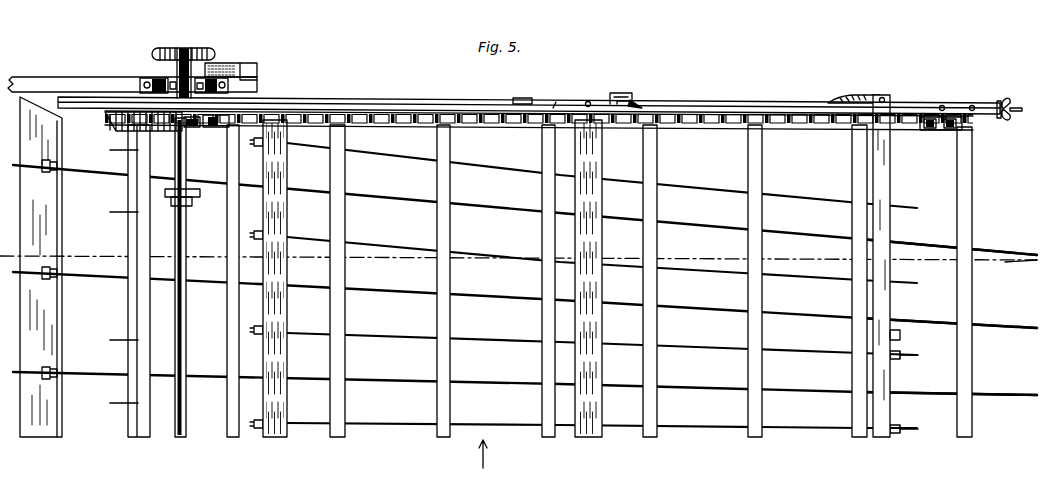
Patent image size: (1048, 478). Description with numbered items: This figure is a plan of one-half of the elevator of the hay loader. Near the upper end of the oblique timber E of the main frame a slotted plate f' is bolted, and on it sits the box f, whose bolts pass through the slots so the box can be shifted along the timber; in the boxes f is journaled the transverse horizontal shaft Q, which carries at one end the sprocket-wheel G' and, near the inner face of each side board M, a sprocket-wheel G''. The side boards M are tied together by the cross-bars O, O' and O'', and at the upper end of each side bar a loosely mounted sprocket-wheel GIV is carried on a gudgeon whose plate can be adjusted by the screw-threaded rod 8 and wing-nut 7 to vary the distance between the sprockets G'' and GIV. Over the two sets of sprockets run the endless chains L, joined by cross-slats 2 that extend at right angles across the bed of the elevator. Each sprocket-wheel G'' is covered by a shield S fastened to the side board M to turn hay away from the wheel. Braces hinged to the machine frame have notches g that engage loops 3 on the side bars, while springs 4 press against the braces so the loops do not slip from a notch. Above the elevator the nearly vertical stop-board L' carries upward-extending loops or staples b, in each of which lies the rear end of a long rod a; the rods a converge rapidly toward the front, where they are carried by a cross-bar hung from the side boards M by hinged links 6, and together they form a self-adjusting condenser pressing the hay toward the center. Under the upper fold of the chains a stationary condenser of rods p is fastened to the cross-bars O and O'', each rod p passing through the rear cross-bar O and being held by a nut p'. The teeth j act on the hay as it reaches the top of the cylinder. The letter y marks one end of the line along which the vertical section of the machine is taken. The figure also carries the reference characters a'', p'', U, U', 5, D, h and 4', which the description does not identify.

The rod a is at (520, 280).
The wire end a'' is at (950, 336).
The rod p is at (602, 301).
The nut p' is at (253, 294).
The bolt p'' is at (917, 410).
The section line y is at (1017, 274).
The stop-board L' is at (41, 267).
The loop or staple b is at (58, 172).
The hinged link 6 is at (55, 276).
The cross-slat 2 is at (977, 155).
The tooth j is at (112, 214).
The cross-bar O is at (275, 278).
The cross-bar O' is at (588, 278).
The notch g is at (887, 132).
The cross-bar O'' is at (908, 337).
The shaft Q is at (186, 329).
The flange U is at (193, 191).
The flange U' is at (194, 211).
The beam 5 is at (733, 103).
The endless chain L is at (539, 131).
The side board M is at (553, 108).
The loop 3 is at (626, 93).
The spring 4 is at (640, 96).
The wing-nut 7 is at (1002, 101).
The screw-threaded rod 8 is at (1014, 113).
The sprocket-wheel GIV is at (936, 132).
The oblique timber E is at (150, 78).
The block D is at (257, 63).
The sprocket-wheel G' is at (191, 58).
The slotted plate f' is at (154, 75).
The box f is at (195, 75).
The shield S is at (110, 118).
The bracket h is at (192, 129).
The sprocket-wheel G'' is at (216, 138).
The direction arrow 4' is at (489, 458).